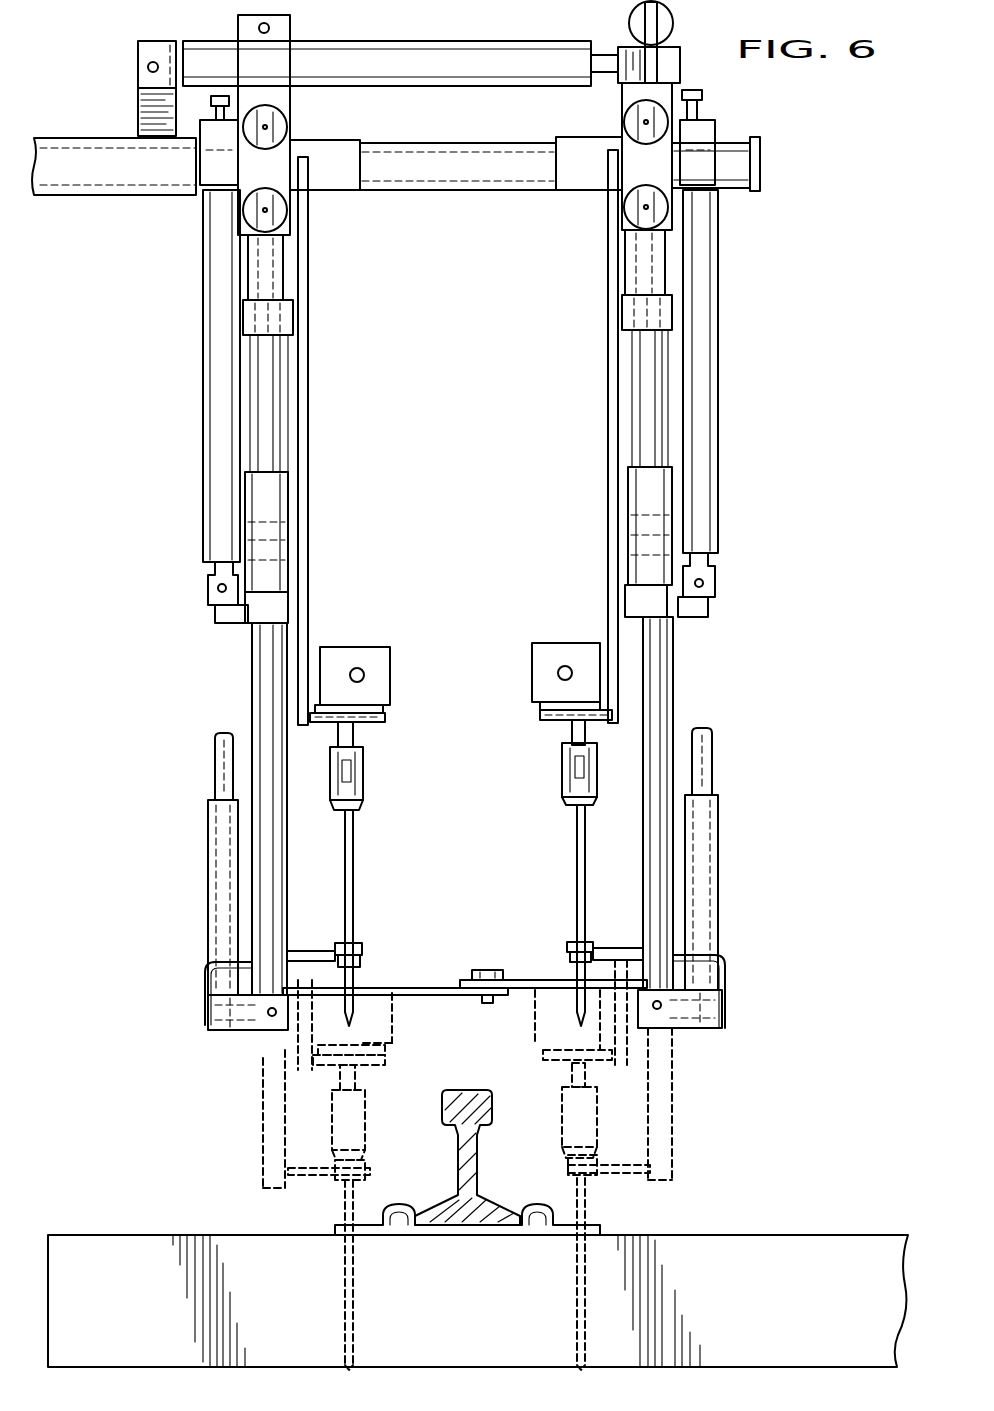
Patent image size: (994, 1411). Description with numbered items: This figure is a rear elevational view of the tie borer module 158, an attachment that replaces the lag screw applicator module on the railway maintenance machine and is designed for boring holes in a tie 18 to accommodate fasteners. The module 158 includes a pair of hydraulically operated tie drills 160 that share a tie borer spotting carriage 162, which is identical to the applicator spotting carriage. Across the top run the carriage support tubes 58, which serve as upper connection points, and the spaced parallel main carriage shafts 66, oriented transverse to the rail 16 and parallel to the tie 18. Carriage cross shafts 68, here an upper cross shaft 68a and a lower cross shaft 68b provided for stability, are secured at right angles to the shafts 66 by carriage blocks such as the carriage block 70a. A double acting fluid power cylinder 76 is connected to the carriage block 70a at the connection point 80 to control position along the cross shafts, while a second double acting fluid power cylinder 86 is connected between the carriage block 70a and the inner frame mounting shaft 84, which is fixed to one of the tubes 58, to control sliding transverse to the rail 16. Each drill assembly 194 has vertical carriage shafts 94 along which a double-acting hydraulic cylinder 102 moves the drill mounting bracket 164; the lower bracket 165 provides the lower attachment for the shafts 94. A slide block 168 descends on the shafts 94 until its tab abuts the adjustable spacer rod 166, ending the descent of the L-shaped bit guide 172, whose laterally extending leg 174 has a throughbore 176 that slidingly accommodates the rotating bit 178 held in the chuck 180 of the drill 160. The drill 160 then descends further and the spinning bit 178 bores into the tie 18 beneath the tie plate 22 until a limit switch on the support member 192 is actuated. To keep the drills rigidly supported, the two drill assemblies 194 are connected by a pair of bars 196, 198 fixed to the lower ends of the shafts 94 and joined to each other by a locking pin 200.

The rail 16 is at (466, 1088).
The tie 18 is at (765, 1245).
The tie plate 22 is at (600, 1226).
The carriage support tube 58 is at (82, 190).
The main carriage shaft 66 is at (445, 165).
The carriage cross shaft 68 is at (630, 125).
The upper cross shaft 68a is at (272, 125).
The lower cross shaft 68b is at (255, 210).
The carriage block 70a is at (680, 62).
The double acting fluid power cylinder 76 is at (673, 23).
The connection point 80 is at (640, 20).
The inner frame mounting shaft 84 is at (147, 117).
The second double acting fluid power cylinder 86 is at (412, 60).
The vertical carriage shaft 94 is at (511, 806).
The double-acting hydraulic cylinder 102 is at (220, 438).
The tie borer module 158 is at (118, 57).
The tie drill 160 is at (380, 647).
The tie borer spotting carriage 162 is at (776, 116).
The drill mounting bracket 164 is at (308, 410).
The lower bracket 165 is at (225, 1030).
The spacer rod 166 is at (222, 862).
The slide block 168 is at (265, 502).
The bit guide 172 is at (263, 1118).
The laterally extending leg 174 is at (308, 952).
The throughbore 176 is at (357, 940).
The rotating bit 178 is at (352, 862).
The chuck 180 is at (350, 775).
The support member 192 is at (262, 703).
The drill assembly 194 is at (158, 408).
The bar 196 is at (420, 985).
The bar 198 is at (535, 980).
The locking pin 200 is at (487, 968).